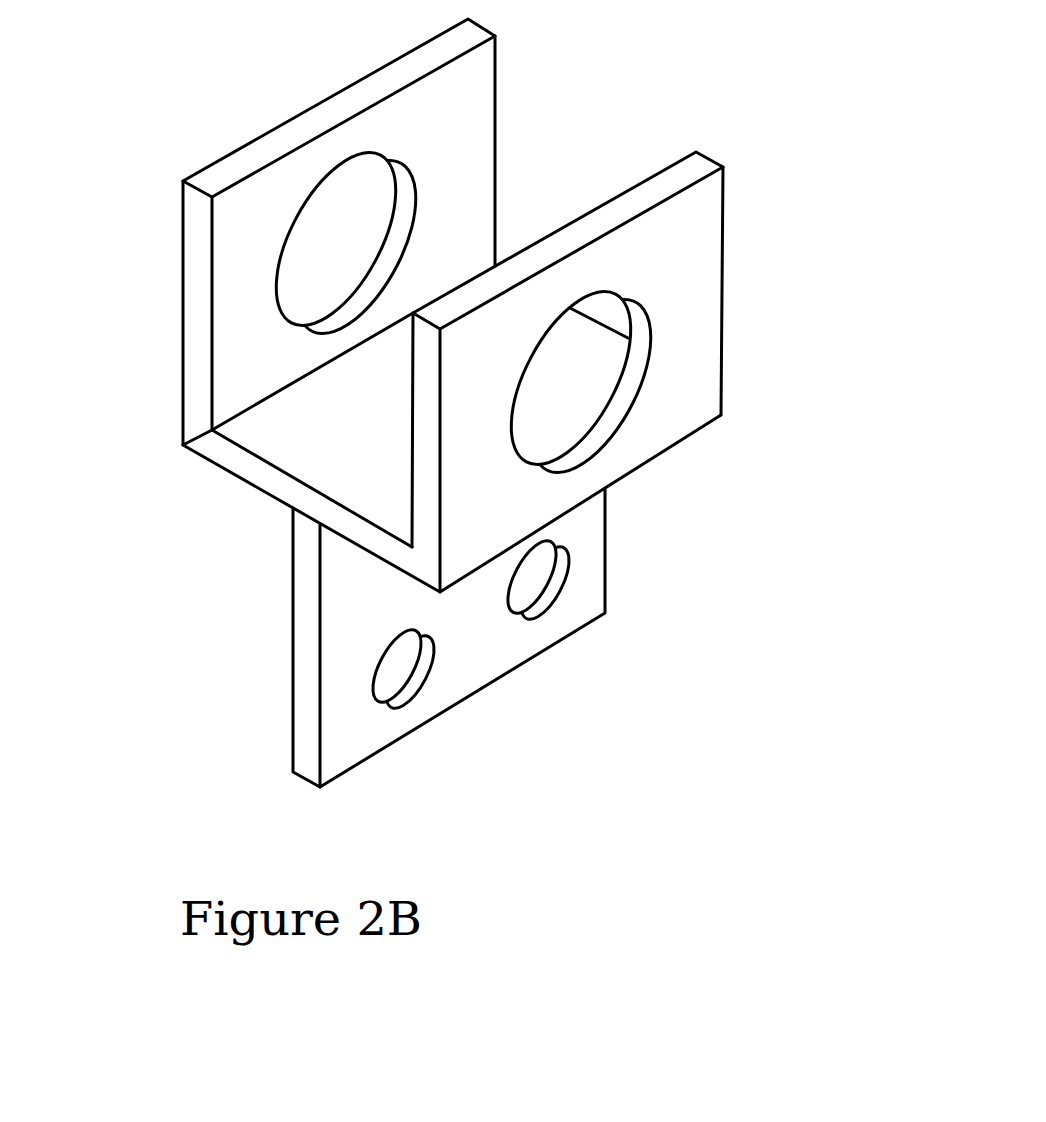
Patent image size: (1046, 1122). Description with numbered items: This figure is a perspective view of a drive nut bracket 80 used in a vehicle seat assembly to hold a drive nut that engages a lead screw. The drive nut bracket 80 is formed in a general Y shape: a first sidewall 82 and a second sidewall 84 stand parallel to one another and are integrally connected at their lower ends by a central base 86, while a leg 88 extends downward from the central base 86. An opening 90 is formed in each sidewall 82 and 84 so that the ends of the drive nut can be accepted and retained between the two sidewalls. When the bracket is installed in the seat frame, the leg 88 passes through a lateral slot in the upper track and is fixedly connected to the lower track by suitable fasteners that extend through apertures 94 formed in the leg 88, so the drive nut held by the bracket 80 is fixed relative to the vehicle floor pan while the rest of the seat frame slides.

The drive nut bracket 80 is at (434, 403).
The first sidewall 82 is at (182, 313).
The second sidewall 84 is at (626, 372).
The central base 86 is at (262, 452).
The leg 88 is at (562, 637).
The opening 90 is at (630, 415).
The apertures 94 is at (553, 600).